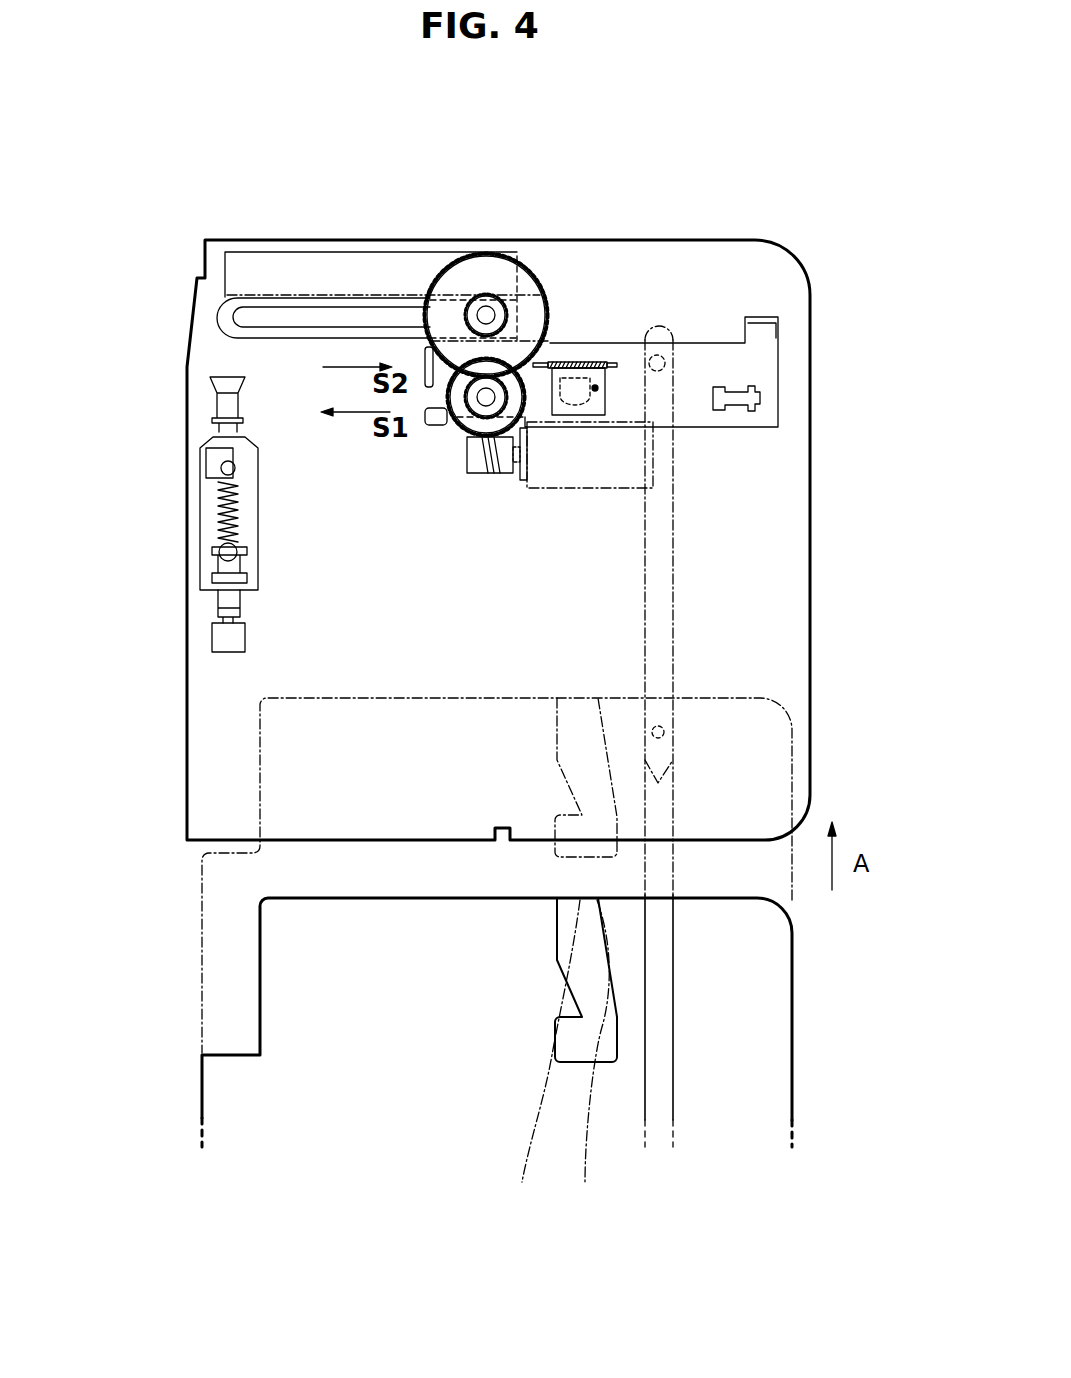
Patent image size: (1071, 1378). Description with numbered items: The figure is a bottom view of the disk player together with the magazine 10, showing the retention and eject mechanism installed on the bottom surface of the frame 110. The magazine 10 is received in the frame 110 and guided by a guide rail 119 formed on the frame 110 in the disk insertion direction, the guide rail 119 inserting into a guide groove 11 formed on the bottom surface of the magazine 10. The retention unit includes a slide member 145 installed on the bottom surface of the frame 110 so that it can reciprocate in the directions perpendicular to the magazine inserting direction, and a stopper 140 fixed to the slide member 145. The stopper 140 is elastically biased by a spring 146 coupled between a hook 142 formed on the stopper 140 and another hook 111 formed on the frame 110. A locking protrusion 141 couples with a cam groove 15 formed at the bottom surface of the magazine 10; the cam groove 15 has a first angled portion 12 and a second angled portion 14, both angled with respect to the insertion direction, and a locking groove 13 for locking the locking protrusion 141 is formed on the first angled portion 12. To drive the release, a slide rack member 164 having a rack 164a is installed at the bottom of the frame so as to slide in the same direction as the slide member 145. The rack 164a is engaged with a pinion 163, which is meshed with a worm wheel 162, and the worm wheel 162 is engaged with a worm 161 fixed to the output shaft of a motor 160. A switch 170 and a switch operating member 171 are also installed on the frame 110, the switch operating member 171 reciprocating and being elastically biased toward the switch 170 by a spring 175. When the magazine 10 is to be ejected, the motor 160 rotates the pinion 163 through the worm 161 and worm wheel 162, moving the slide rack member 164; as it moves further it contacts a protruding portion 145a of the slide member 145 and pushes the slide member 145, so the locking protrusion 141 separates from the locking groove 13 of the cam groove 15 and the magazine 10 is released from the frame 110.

The magazine 10 is at (797, 1024).
The guide groove 11 is at (665, 935).
The first angled portion 12 is at (581, 900).
The locking groove 13 is at (541, 1057).
The second angled portion 14 is at (588, 1057).
The cam groove 15 is at (571, 931).
The frame 110 is at (815, 726).
The hook 111 is at (572, 378).
The guide rail 119 is at (678, 641).
The stopper 140 is at (760, 398).
The locking protrusion 141 is at (597, 362).
The hook 142 is at (652, 333).
The slide member 145 is at (762, 370).
The protruding portion 145a is at (780, 320).
The spring 146 is at (618, 362).
The motor 160 is at (632, 487).
The worm 161 is at (467, 458).
The worm wheel 162 is at (513, 363).
The pinion 163 is at (443, 280).
The slide rack member 164 is at (233, 253).
The rack 164a is at (217, 300).
The switch 170 is at (212, 637).
The switch operating member 171 is at (212, 553).
The spring 175 is at (218, 507).